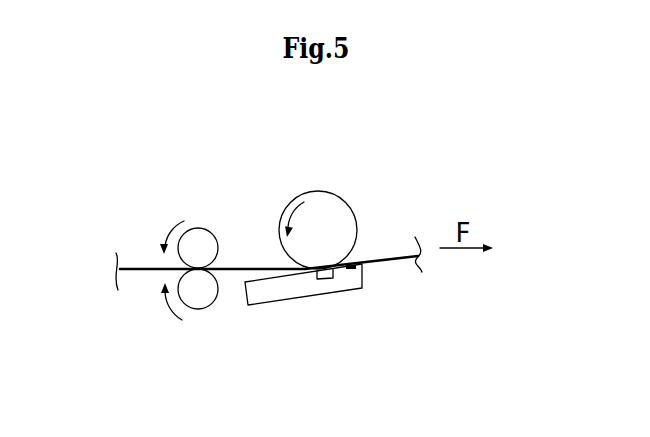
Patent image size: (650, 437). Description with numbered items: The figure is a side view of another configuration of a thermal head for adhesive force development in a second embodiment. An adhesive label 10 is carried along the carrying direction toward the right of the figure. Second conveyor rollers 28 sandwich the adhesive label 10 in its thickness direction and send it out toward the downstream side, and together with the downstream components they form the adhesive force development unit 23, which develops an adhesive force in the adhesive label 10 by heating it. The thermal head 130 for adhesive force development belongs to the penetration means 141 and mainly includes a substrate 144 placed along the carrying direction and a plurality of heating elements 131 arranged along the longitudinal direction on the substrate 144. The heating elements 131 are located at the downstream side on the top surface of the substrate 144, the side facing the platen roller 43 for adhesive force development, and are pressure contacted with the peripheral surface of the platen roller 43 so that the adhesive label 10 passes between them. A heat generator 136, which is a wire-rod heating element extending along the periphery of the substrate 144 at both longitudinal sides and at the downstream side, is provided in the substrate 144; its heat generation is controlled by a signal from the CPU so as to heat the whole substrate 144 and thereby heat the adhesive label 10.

The adhesive label 10 is at (133, 272).
The adhesive force development unit 23 is at (189, 252).
The second conveyor rollers 28 is at (200, 297).
The platen roller for adhesive force development 43 is at (318, 203).
The penetration means 141 is at (394, 265).
The substrate 144 is at (273, 290).
The heating elements 131 is at (325, 279).
The thermal head for adhesive force development 130 is at (358, 292).
The heat generator 136 is at (350, 268).